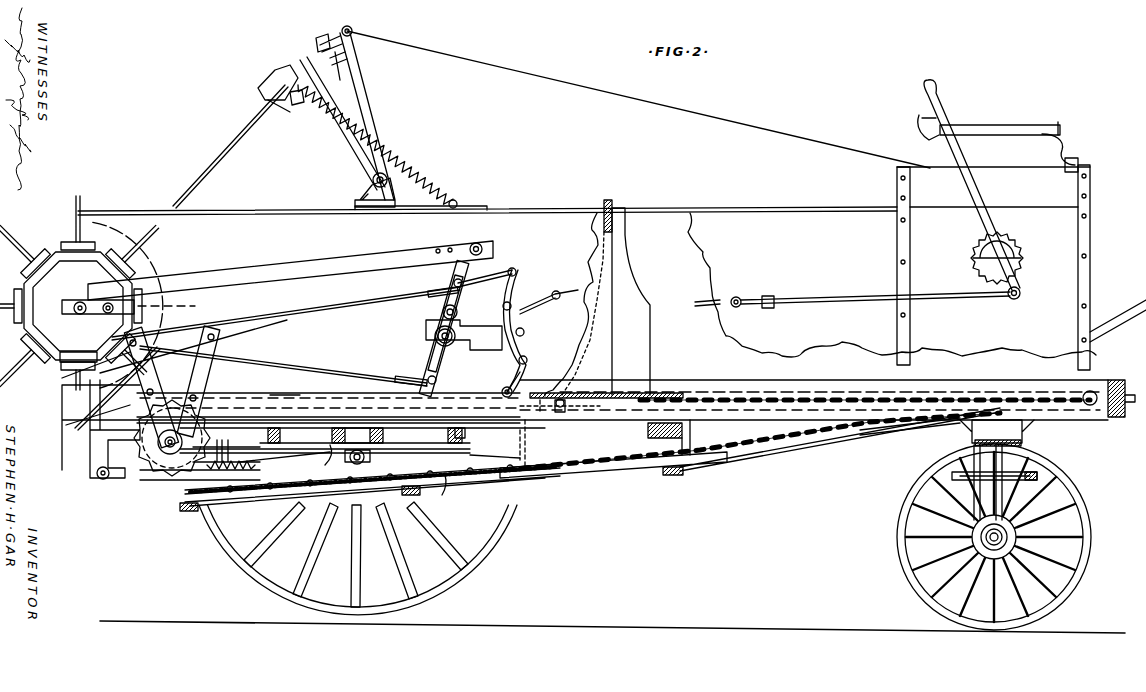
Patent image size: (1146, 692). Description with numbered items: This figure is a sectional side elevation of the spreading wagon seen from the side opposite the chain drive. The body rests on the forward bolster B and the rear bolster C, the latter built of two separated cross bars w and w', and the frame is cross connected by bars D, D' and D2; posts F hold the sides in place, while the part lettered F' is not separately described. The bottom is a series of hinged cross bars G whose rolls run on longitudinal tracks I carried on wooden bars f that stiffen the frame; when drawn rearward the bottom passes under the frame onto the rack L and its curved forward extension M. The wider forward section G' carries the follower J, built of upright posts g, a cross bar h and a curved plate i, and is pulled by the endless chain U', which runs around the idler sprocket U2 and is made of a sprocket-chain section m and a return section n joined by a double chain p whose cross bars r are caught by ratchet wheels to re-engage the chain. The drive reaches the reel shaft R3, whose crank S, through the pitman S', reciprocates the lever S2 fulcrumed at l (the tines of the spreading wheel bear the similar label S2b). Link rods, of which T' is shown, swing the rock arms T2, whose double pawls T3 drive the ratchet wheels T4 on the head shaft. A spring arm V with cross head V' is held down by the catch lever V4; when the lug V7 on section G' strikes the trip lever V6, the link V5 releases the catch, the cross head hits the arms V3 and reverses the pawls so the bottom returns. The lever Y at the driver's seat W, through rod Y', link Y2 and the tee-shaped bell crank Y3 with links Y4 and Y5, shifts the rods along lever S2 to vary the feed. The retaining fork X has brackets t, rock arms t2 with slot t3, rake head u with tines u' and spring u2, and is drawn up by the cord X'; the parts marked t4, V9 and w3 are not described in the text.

The crank S is at (75, 309).
The lever S2 is at (50, 258).
The shaft R3 is at (52, 338).
The pitman rod S' is at (246, 269).
The link rod T' is at (286, 332).
The rock arms T2 is at (150, 352).
The double pawls T3 is at (212, 366).
The ratchet wheels T4 is at (140, 478).
The spring arm V is at (465, 328).
The guide plate S2b is at (464, 320).
The fulcrum l is at (434, 330).
The link Y4 is at (520, 298).
The bell crank lever Y3 is at (548, 310).
The link Y5 is at (530, 366).
The cross head V' is at (100, 415).
The catch lever V4 is at (100, 479).
The link V5 is at (226, 496).
The arms V3 is at (88, 386).
The rod V9 is at (85, 408).
The trip lever V6 is at (292, 392).
The lug V7 is at (560, 420).
The cross bar D2 is at (282, 435).
The rear bolster C is at (357, 435).
The cross bar w is at (427, 433).
The roller w3 is at (372, 452).
The cross bar w' is at (285, 462).
The sprocket chain section m is at (330, 459).
The double chain p is at (481, 453).
The cross bar D' is at (477, 435).
The cross bars r is at (443, 488).
The rock arm t2 is at (356, 96).
The slot t3 is at (344, 60).
The brackets t is at (336, 134).
The lever base t4 is at (422, 178).
The spring u2 is at (380, 144).
The cross bar u is at (281, 82).
The tines u' is at (230, 146).
The retaining fork X is at (278, 117).
The cord X' is at (638, 99).
The cross bar h is at (614, 226).
The upright posts g is at (640, 342).
The curved plate i is at (606, 280).
The follower J is at (839, 285).
The wider bottom section G' is at (611, 375).
The link Y2 is at (738, 296).
The rod Y' is at (875, 289).
The posts F is at (993, 266).
The rear post F' is at (1096, 267).
The driver's seat W is at (1020, 130).
The lever Y is at (970, 189).
The return chain n is at (815, 394).
The tracks I is at (750, 406).
The idler sprocket U2 is at (1092, 406).
The longitudinal bars f is at (776, 420).
The rack L is at (648, 460).
The cross bar D is at (679, 437).
The forward bolster B is at (1026, 432).
The curved bars M is at (880, 436).
The endless chain U' is at (560, 422).
The cross bars G is at (530, 461).